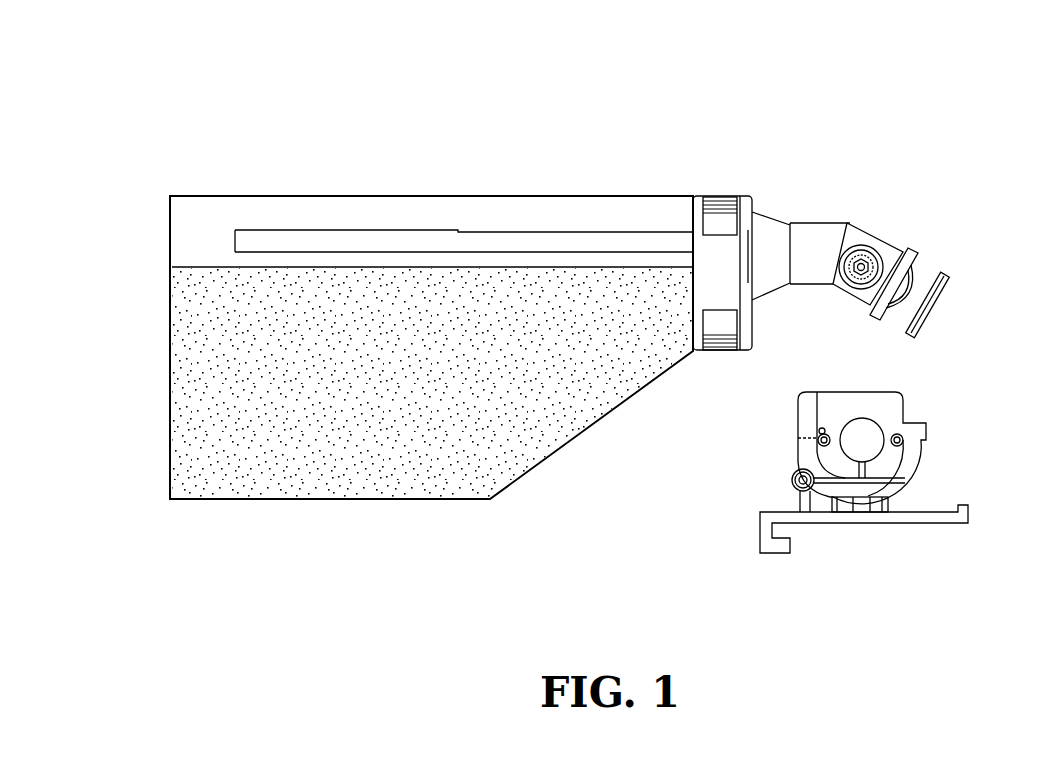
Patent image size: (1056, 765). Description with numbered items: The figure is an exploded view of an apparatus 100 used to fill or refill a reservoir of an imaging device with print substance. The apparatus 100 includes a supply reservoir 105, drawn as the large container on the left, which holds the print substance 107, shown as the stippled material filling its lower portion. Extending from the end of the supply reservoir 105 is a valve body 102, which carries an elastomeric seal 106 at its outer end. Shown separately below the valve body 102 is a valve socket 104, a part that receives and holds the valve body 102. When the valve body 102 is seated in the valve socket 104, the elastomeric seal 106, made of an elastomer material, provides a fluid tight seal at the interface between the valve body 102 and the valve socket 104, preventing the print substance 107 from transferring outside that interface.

The apparatus 100 is at (237, 108).
The valve body 102 is at (823, 240).
The valve socket 104 is at (910, 452).
The supply reservoir 105 is at (190, 500).
The elastomeric seal 106 is at (944, 282).
The print substance 107 is at (285, 478).